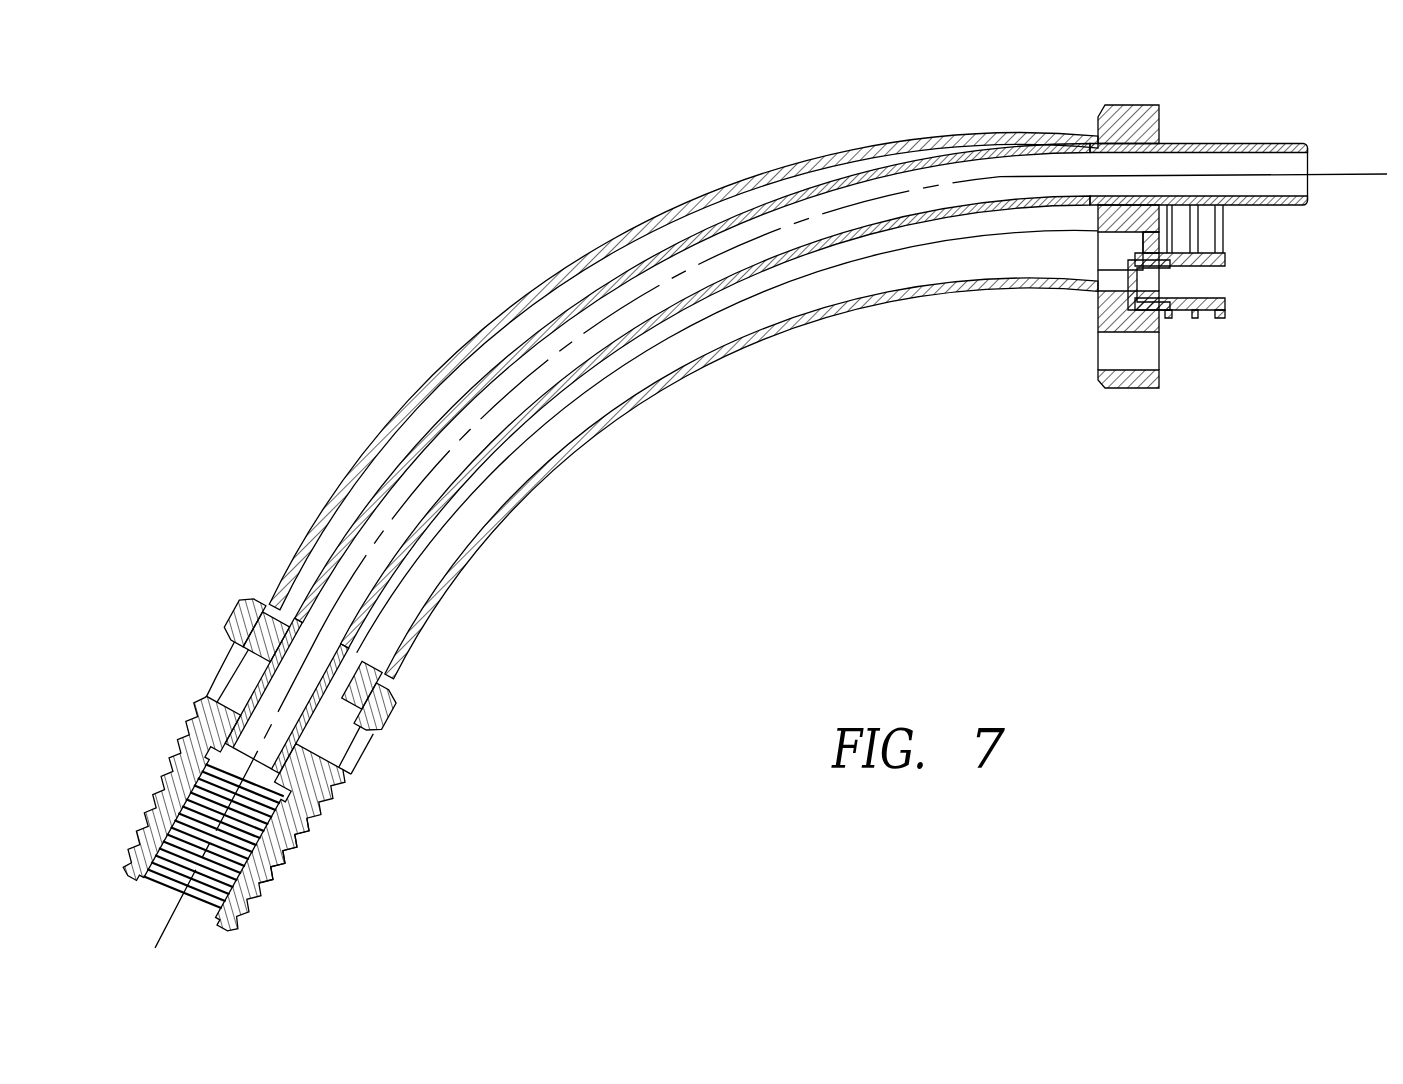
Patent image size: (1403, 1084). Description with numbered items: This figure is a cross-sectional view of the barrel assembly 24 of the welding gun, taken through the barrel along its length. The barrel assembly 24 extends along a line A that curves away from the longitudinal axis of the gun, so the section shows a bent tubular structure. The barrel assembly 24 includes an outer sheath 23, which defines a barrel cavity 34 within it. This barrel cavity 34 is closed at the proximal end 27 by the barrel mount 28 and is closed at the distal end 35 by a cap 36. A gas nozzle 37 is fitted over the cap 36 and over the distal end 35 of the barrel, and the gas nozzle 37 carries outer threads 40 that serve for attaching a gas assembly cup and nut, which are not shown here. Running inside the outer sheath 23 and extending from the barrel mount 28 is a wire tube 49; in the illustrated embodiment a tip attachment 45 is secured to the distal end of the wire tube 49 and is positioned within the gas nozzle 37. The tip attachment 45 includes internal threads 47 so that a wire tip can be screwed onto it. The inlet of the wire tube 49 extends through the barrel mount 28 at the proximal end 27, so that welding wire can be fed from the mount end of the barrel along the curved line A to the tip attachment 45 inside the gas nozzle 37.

The outer sheath 23 is at (530, 497).
The barrel assembly 24 is at (517, 203).
The proximal end 27 is at (1100, 125).
The barrel mount 28 is at (1098, 380).
The barrel cavity 34 is at (938, 276).
The distal end 35 is at (272, 592).
The cap 36 is at (362, 665).
The gas nozzle 37 is at (347, 782).
The outer threads 40 is at (295, 878).
The tip attachment 45 is at (260, 872).
The internal threads 47 is at (295, 852).
The wire tube 49 is at (1270, 127).
The line A is at (814, 221).